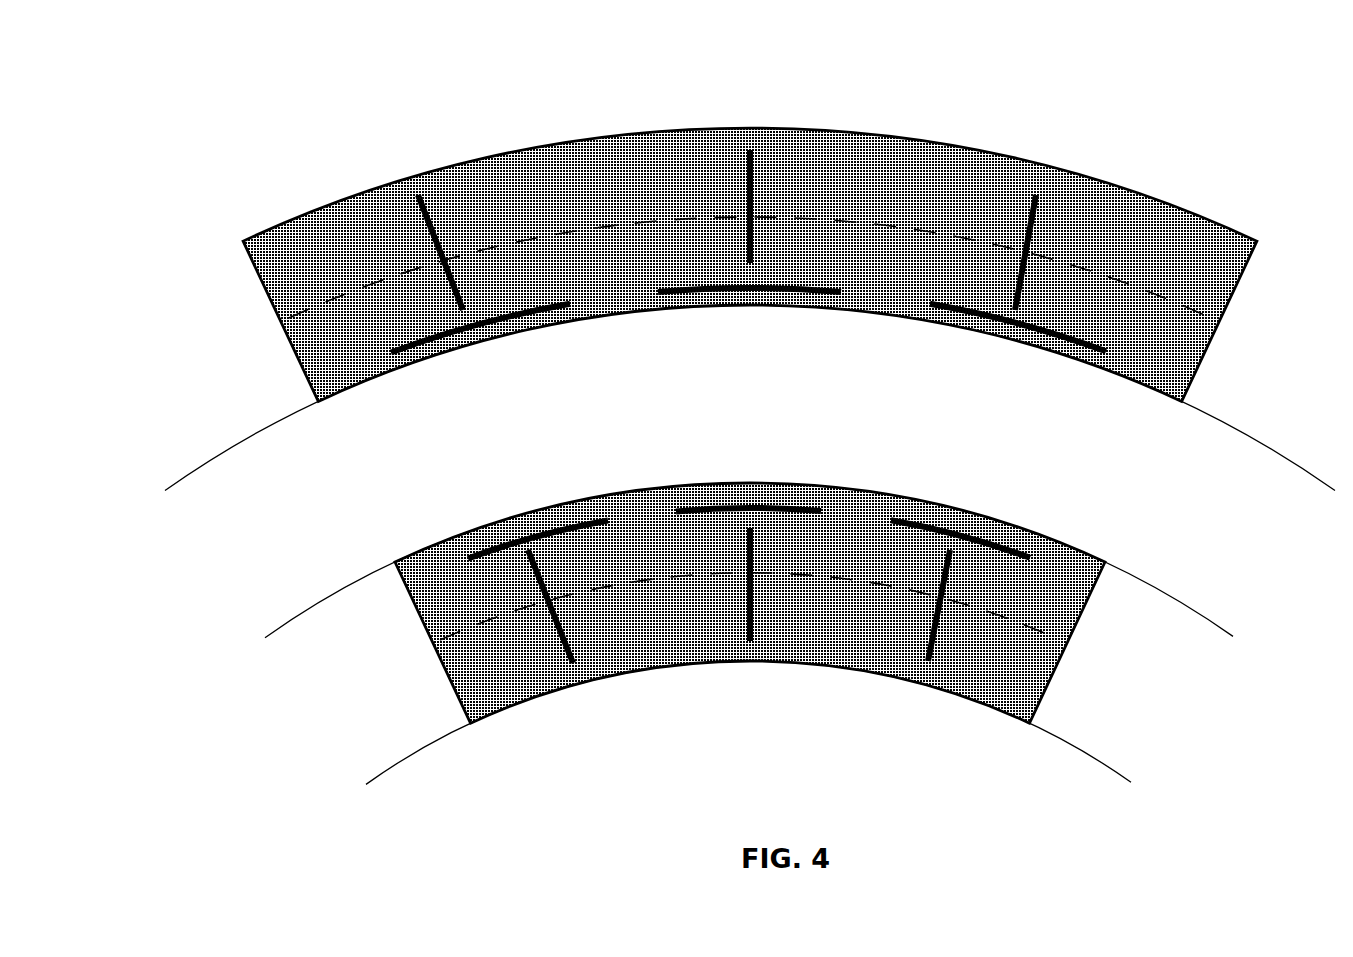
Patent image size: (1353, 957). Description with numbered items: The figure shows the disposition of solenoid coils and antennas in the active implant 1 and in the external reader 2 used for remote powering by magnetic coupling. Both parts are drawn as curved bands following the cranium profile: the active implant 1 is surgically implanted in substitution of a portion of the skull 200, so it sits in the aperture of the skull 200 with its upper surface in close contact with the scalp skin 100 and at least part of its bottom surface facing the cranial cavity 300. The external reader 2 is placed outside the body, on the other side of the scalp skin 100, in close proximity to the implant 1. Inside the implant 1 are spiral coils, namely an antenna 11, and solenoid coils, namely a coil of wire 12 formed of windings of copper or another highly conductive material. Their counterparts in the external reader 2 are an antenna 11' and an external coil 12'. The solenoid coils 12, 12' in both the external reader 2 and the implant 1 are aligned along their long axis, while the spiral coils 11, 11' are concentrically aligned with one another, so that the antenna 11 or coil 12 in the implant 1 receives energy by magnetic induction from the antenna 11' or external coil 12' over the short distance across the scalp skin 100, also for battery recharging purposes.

The active implant 1 is at (750, 603).
The external reader 2 is at (750, 264).
The antenna 11 is at (749, 488).
The antenna 11' is at (748, 341).
The coil of wire 12 is at (739, 642).
The external coil 12' is at (727, 204).
The scalp skin 100 is at (750, 398).
The skull 200 is at (749, 585).
The cranial cavity 300 is at (748, 729).